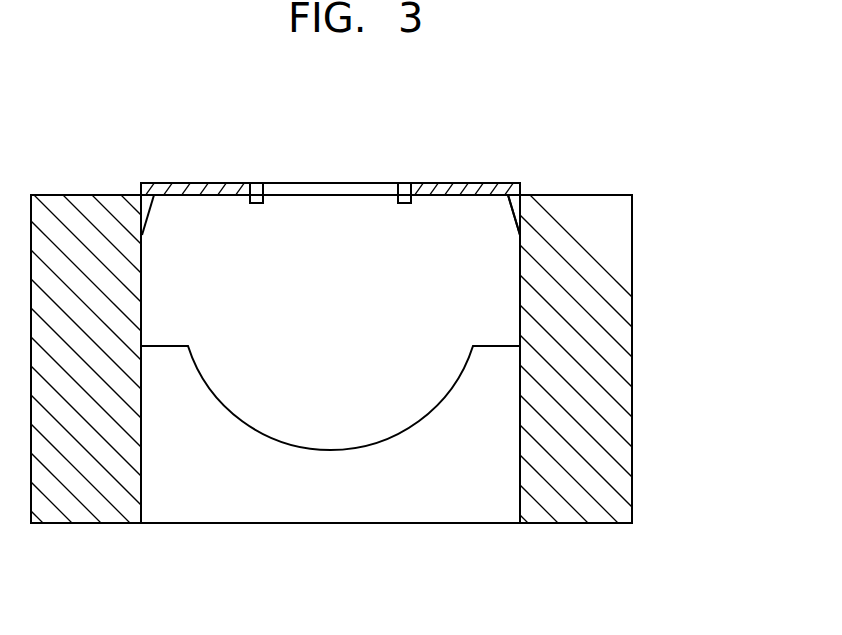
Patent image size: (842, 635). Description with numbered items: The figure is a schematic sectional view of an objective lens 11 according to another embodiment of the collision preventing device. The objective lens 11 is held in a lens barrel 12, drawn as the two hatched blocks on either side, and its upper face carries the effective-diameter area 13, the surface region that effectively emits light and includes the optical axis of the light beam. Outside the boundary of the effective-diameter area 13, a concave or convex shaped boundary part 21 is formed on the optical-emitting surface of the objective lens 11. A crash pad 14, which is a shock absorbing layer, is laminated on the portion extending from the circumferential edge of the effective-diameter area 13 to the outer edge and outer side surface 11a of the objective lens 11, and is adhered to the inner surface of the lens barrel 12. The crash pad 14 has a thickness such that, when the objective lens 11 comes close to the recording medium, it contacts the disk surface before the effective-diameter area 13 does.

The objective lens 11 is at (475, 245).
The outer side surface of the objective lens 11a is at (530, 209).
The lens barrel 12 is at (90, 507).
The effective-diameter area 13 is at (333, 171).
The crash pad 14 is at (460, 190).
The boundary part 21 is at (256, 171).